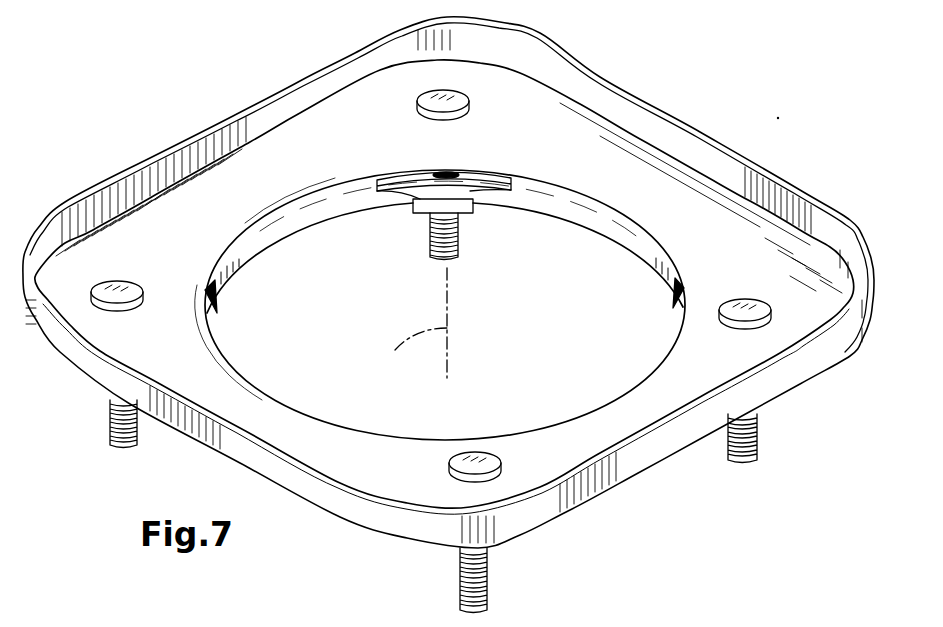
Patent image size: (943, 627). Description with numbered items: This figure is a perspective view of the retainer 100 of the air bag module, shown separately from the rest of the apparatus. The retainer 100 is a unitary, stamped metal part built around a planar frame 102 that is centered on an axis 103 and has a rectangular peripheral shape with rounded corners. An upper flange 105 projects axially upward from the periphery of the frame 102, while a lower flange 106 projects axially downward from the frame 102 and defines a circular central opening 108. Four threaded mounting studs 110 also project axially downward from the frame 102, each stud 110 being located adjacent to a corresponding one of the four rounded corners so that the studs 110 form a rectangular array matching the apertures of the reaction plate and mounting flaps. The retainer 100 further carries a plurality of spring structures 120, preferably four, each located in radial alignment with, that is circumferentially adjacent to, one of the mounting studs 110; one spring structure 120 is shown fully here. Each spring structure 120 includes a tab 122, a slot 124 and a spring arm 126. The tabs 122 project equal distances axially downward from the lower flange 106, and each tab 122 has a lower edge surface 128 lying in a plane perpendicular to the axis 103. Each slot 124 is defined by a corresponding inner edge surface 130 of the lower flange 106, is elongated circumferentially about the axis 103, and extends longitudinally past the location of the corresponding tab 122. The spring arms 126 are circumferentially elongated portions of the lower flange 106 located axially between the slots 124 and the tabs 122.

The retainer 100 is at (150, 119).
The planar frame 102 is at (297, 146).
The axis 103 is at (402, 341).
The upper flange 105 is at (530, 40).
The lower flange 106 is at (602, 222).
The circular central opening 108 is at (646, 231).
The threaded mounting studs 110 is at (452, 258).
The spring structure 120 is at (378, 167).
The tab 122 is at (435, 201).
The slot 124 is at (517, 190).
The spring arm 126 is at (462, 192).
The lower edge surface 128 is at (422, 214).
The inner edge surface 130 is at (472, 176).